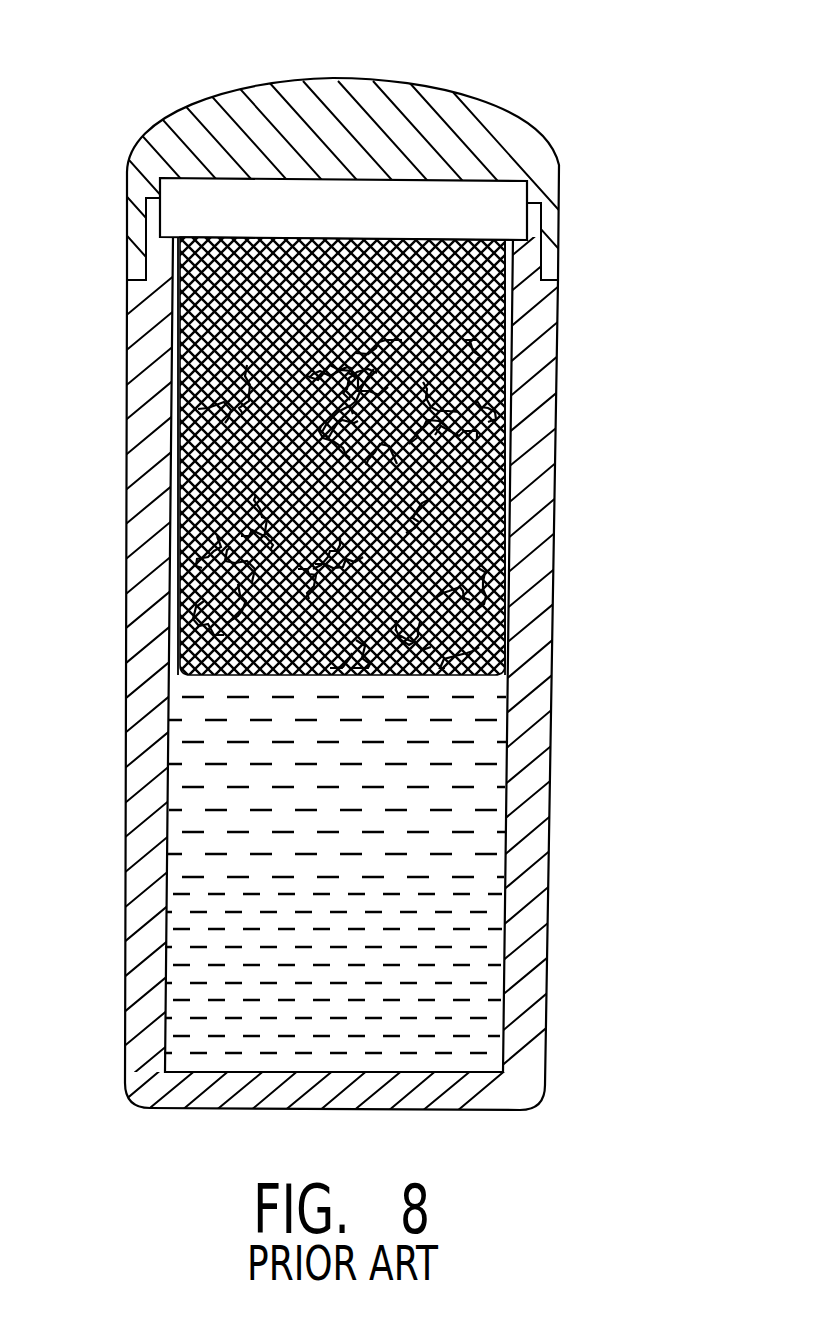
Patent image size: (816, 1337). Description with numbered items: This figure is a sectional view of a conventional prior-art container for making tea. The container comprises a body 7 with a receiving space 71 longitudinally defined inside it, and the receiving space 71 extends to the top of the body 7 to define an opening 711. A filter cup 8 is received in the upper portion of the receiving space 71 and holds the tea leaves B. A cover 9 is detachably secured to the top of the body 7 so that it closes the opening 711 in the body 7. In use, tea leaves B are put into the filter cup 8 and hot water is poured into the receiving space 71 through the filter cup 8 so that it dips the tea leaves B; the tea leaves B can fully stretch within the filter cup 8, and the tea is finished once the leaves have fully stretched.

The body 7 is at (627, 564).
The receiving space 71 is at (483, 852).
The opening 711 is at (527, 225).
The filter cup 8 is at (177, 312).
The cover 9 is at (407, 138).
The tea leaves B is at (487, 510).